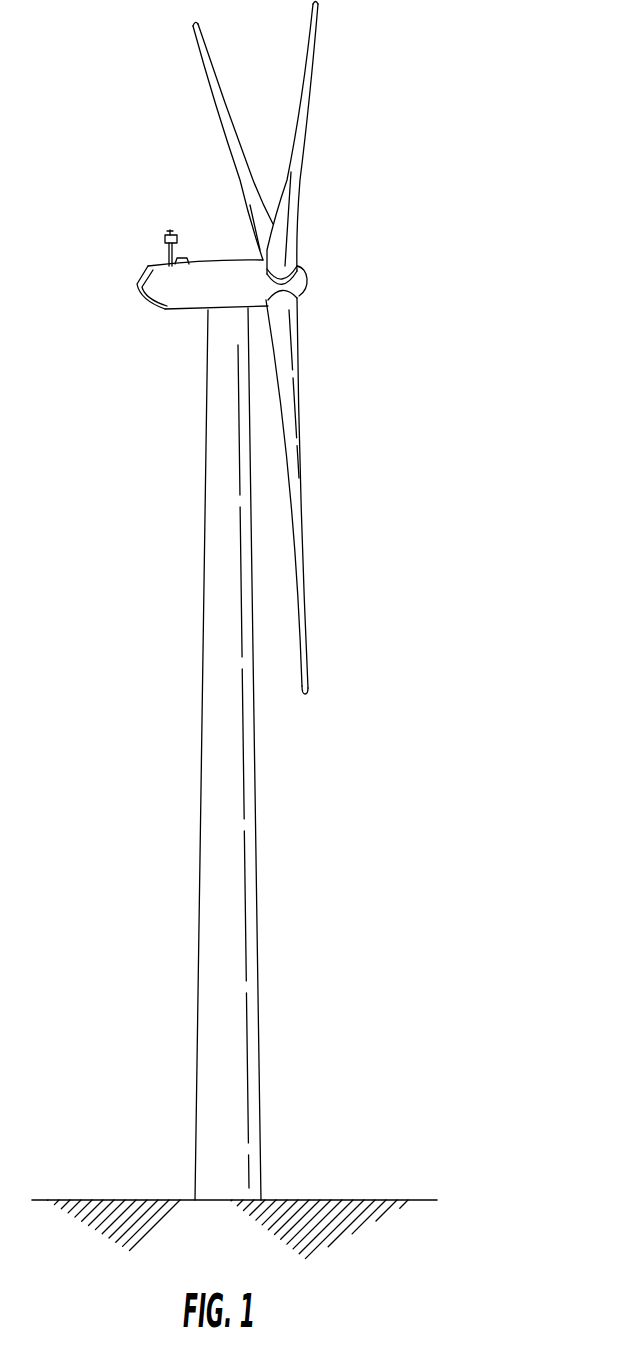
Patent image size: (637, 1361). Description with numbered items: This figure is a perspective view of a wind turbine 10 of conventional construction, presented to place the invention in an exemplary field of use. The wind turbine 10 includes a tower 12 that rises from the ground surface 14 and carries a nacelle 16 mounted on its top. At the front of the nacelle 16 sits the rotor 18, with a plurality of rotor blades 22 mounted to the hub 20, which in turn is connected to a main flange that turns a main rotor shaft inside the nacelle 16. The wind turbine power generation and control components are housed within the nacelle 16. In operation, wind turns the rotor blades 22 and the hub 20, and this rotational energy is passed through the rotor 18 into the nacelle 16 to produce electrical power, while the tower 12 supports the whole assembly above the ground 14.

The wind turbine 10 is at (414, 85).
The tower 12 is at (213, 874).
The support surface 14 is at (116, 1200).
The nacelle 16 is at (185, 312).
The rotor hub 18 is at (301, 348).
The hub 20 is at (308, 288).
The rotor blades 22 is at (293, 125).